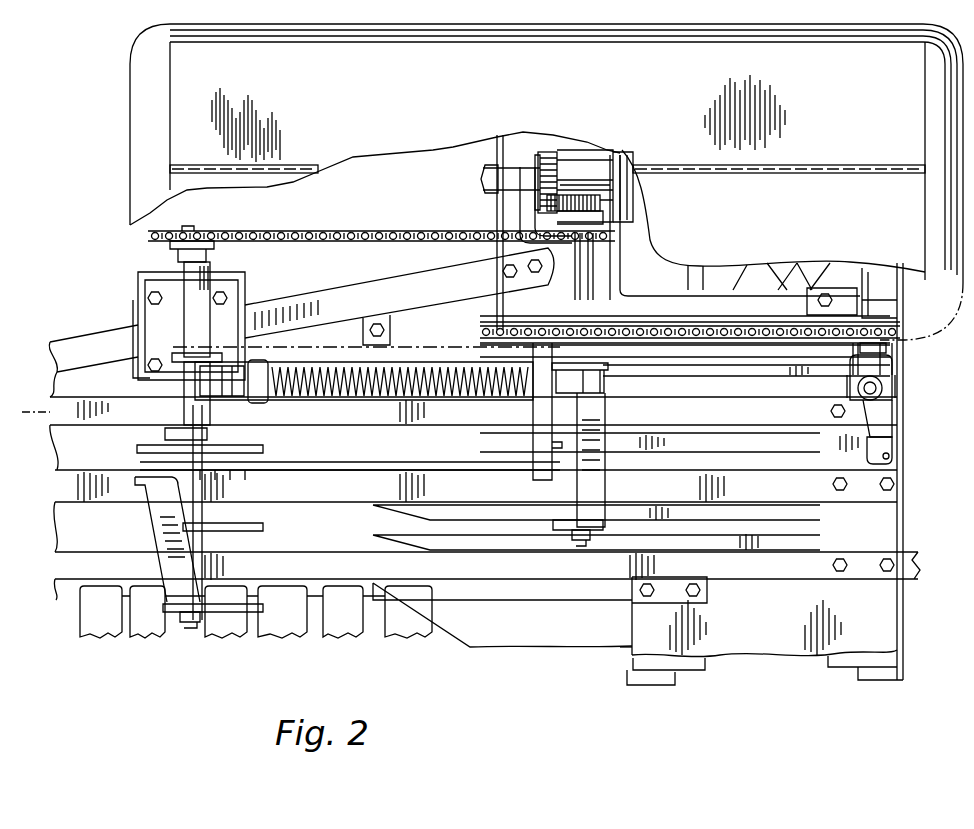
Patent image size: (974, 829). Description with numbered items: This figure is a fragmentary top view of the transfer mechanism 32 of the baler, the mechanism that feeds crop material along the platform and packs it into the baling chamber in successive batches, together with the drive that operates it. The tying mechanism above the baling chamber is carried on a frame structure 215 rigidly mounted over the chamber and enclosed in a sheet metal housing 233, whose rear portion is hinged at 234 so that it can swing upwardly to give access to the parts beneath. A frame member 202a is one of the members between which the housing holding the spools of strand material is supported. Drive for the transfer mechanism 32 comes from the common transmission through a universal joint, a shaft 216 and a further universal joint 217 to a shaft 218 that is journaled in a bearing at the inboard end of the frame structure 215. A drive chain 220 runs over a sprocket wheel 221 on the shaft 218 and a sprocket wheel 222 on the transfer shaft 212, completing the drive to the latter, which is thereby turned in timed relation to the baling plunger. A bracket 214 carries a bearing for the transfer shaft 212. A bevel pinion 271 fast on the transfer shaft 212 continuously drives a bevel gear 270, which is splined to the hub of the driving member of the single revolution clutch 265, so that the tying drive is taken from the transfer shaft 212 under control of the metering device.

The sheet metal housing 233 is at (183, 150).
The hinge 234 is at (823, 168).
The bracket 214 is at (497, 252).
The frame member 202a is at (338, 305).
The bevel gear 270 is at (553, 158).
The transfer shaft 212 is at (573, 195).
The single revolution clutch 265 is at (630, 162).
The bevel pinion 271 is at (595, 198).
The frame structure 215 is at (785, 300).
The drive chain 220 is at (693, 327).
The sprocket wheel 221 is at (873, 333).
The shaft 218 is at (873, 345).
The sprocket wheel 222 is at (588, 333).
The transfer mechanism 32 is at (303, 543).
The universal joint 217 is at (888, 376).
The shaft 216 is at (887, 445).